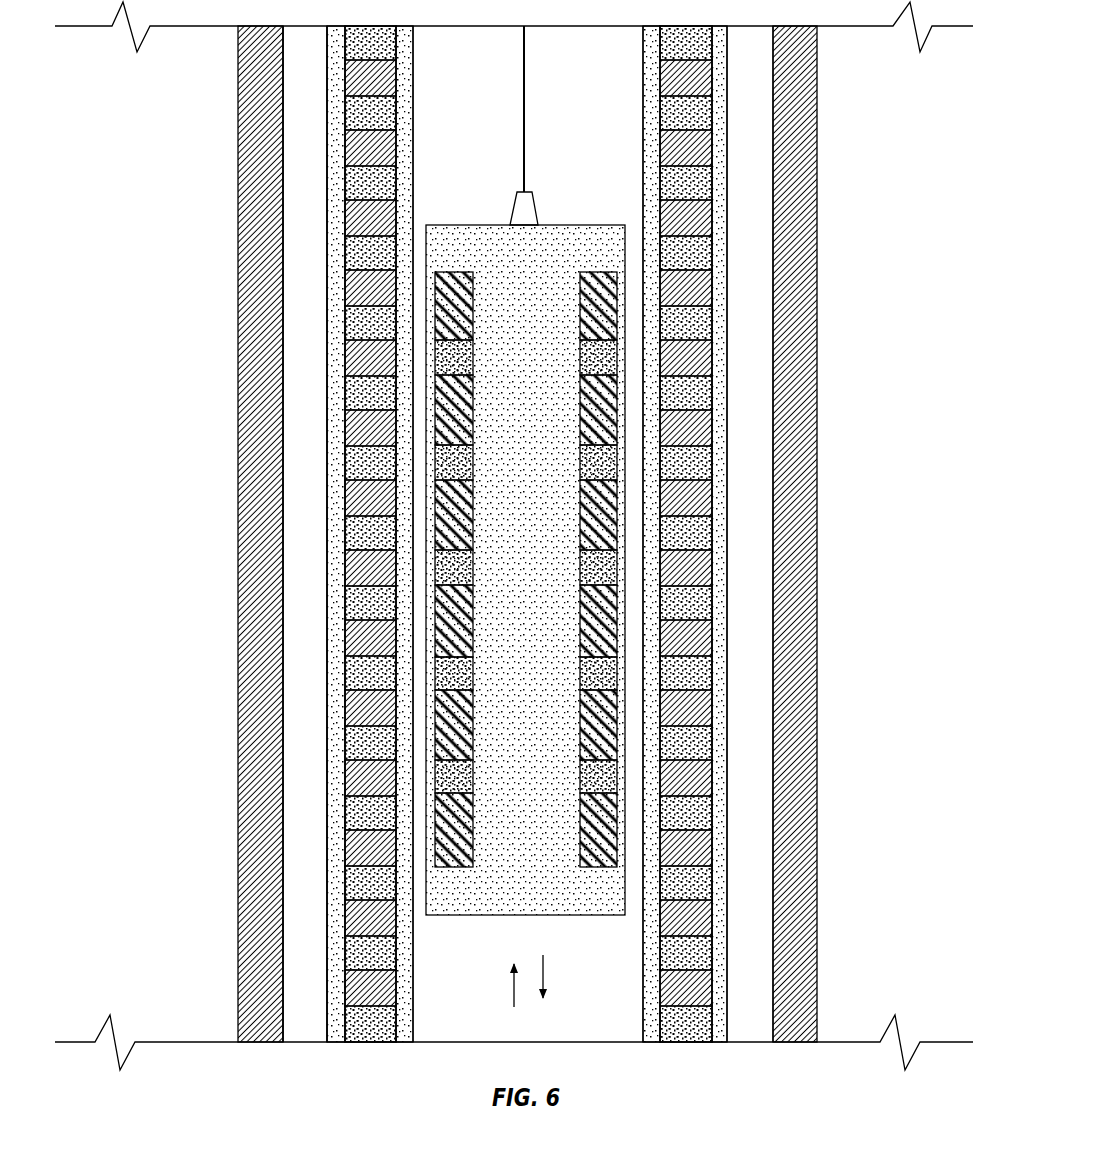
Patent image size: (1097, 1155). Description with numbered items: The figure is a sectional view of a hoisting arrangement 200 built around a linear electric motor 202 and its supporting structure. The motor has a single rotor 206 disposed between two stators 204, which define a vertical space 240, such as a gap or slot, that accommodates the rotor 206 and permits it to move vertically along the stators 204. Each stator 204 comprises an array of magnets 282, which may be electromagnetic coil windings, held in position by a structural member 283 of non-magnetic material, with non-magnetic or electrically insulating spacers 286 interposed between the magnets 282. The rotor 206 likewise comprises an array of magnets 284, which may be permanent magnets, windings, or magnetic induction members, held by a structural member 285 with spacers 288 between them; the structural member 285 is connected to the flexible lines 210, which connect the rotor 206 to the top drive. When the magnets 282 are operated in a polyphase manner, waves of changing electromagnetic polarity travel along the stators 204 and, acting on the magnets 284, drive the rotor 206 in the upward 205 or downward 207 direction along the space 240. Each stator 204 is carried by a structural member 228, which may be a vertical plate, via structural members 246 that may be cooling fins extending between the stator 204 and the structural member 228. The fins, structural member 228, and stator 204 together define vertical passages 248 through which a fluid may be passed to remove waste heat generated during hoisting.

The wellbore system 200 is at (134, 100).
The linear electric motor 202 is at (294, 207).
The stator 204 is at (320, 292).
The upward direction 205 is at (512, 975).
The rotor 206 is at (525, 535).
The downward direction 207 is at (545, 985).
The flexible lines 210 is at (526, 108).
The structural member 228 is at (238, 342).
The vertical space 240 is at (482, 109).
The structural members 246 is at (302, 507).
The passages 248 is at (283, 428).
The magnets 282 is at (714, 286).
The structural member 283 is at (728, 237).
The magnets 284 is at (580, 410).
The structural member 285 is at (583, 224).
The spacers 286 is at (714, 395).
The spacers 288 is at (580, 359).